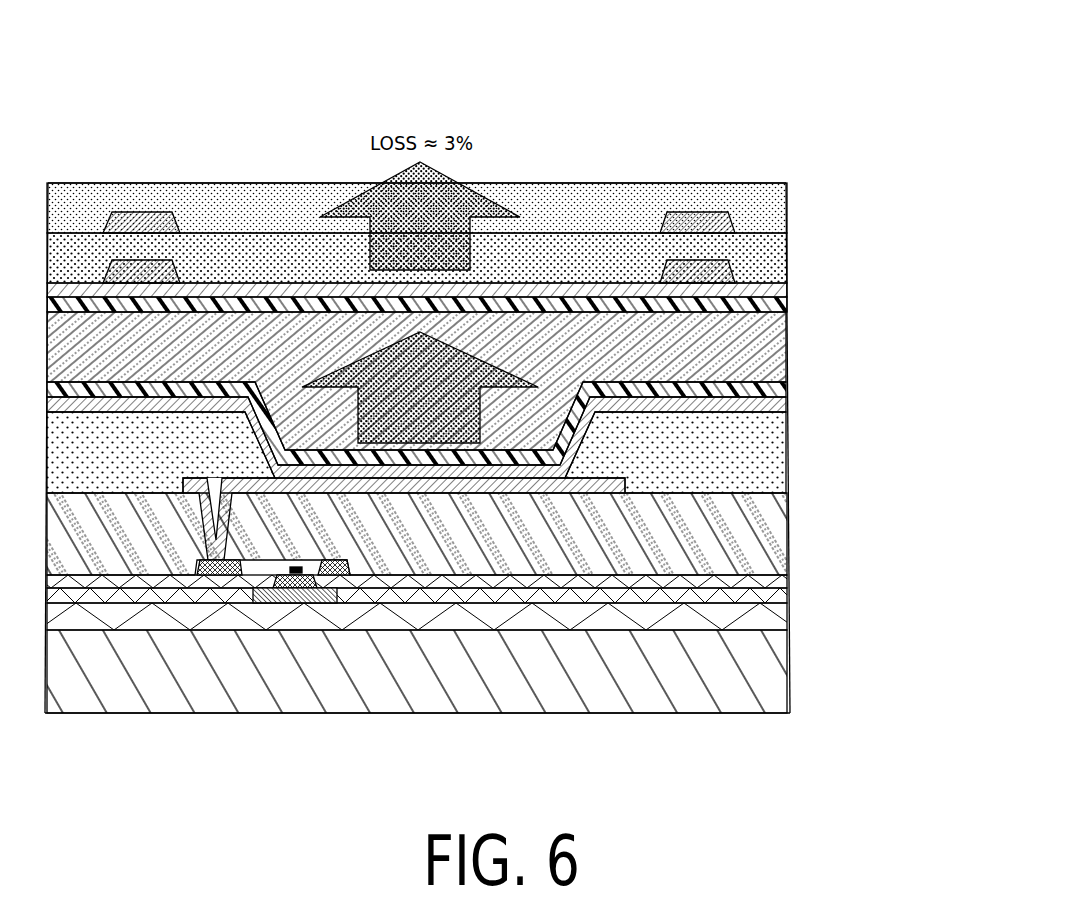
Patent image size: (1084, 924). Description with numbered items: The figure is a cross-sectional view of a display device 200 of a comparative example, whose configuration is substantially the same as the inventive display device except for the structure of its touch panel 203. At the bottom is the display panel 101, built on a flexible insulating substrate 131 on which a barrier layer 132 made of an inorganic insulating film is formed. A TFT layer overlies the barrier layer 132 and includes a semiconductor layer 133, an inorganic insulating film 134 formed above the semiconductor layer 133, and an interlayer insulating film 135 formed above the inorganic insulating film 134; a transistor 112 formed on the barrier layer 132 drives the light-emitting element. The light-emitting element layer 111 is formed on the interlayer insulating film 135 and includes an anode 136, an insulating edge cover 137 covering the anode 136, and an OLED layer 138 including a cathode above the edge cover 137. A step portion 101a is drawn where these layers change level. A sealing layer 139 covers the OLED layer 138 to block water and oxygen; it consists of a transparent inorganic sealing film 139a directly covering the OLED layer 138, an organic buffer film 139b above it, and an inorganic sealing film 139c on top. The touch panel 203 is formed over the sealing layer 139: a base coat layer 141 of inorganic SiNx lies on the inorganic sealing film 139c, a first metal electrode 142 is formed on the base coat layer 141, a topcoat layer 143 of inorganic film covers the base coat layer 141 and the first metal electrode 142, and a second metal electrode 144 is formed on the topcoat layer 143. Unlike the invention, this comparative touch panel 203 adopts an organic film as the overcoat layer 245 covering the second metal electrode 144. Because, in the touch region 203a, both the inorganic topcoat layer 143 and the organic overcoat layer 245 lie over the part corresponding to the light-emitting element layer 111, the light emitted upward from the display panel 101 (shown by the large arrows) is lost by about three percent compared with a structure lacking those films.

The display device 200 is at (806, 54).
The touch region 203a is at (701, 125).
The step portion of array substrate 101a is at (276, 405).
The overcoat layer 245 is at (787, 197).
The second metal electrode 144 is at (733, 224).
The topcoat layer 143 is at (778, 245).
The first metal electrode 142 is at (733, 272).
The base coat layer 141 is at (476, 290).
The touch panel 203 is at (503, 243).
The inorganic sealing film 139c is at (786, 304).
The organic buffer film 139b is at (780, 346).
The inorganic sealing film 139a is at (786, 389).
The sealing layer 139 is at (476, 381).
The OLED layer 138 is at (787, 405).
The edge cover 137 is at (778, 443).
The anode 136 is at (625, 488).
The interlayer insulating film 135 is at (778, 535).
The inorganic insulating film 134 is at (787, 578).
The semiconductor layer 133 is at (787, 597).
The barrier layer 132 is at (787, 617).
The flexible insulating substrate 131 is at (787, 672).
The display panel 101 is at (912, 332).
The transistor 112 is at (296, 612).
The light-emitting element layer 111 is at (418, 500).